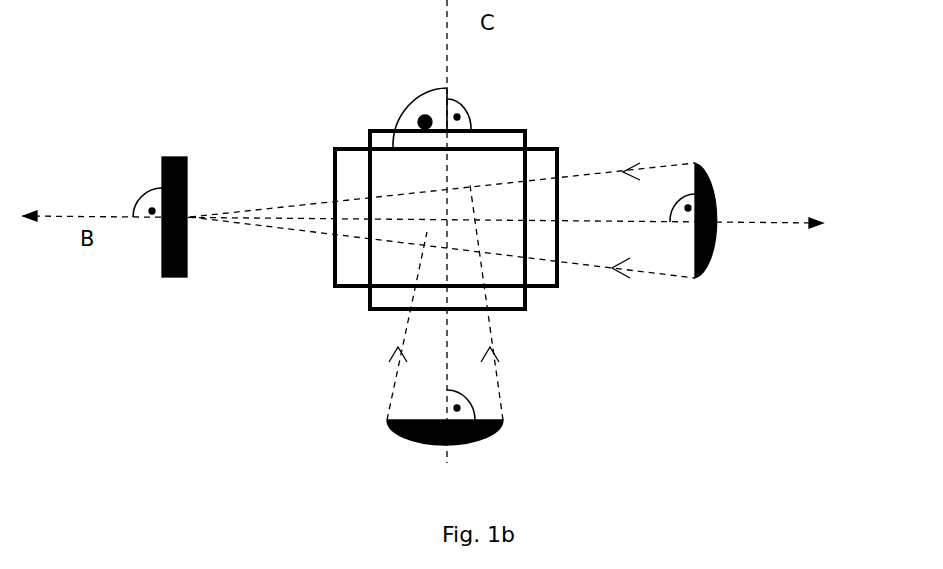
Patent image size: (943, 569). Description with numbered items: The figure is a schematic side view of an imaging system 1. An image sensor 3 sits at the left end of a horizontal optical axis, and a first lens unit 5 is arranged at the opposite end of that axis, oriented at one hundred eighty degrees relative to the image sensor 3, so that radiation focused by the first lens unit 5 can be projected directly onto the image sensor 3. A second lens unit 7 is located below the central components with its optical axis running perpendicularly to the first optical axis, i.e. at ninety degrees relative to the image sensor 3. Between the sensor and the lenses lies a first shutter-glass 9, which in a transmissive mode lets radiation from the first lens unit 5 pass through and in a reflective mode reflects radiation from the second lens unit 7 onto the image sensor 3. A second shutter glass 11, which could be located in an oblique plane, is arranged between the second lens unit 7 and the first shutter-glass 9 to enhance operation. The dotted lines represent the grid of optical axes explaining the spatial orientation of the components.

The imaging system 1 is at (663, 87).
The image sensor 3 is at (222, 183).
The first lens unit 5 is at (722, 178).
The second lens unit 7 is at (506, 407).
The first shutter-glass 9 is at (518, 130).
The second shutter-glass 11 is at (558, 148).